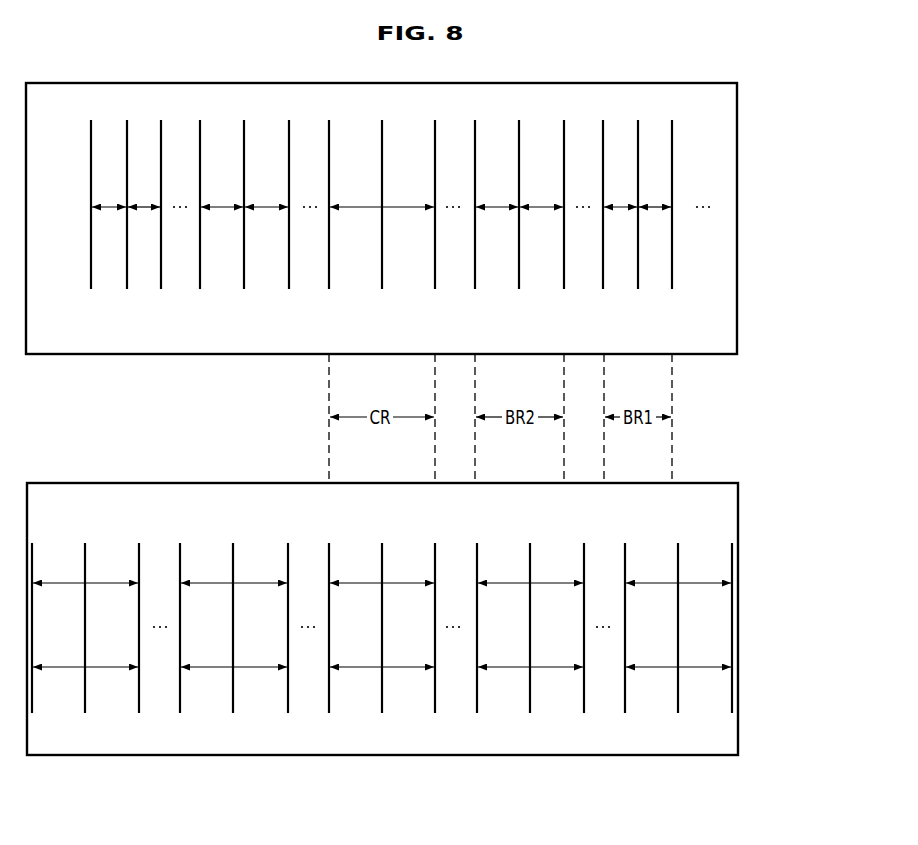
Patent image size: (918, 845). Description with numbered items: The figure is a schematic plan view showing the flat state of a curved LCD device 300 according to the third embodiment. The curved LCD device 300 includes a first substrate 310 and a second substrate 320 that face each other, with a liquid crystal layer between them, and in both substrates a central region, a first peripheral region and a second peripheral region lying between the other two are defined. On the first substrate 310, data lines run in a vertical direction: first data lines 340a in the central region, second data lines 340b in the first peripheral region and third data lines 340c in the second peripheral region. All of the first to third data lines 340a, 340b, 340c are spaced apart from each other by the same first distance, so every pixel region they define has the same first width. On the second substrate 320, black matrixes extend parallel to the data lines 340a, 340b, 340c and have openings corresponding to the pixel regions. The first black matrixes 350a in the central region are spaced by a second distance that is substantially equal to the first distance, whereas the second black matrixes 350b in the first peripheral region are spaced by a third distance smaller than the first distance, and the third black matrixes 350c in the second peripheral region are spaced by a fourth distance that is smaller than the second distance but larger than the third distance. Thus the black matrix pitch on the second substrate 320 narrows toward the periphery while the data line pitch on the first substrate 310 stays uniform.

The curved LCD device 300 is at (103, 431).
The first substrate 310 is at (738, 551).
The second substrate 320 is at (737, 151).
The first data lines 340a is at (329, 530).
The second data lines 340b is at (32, 530).
The third data lines 340c is at (180, 530).
The first black matrixes 350a is at (329, 303).
The second black matrixes 350b is at (91, 303).
The third black matrixes 350c is at (200, 303).